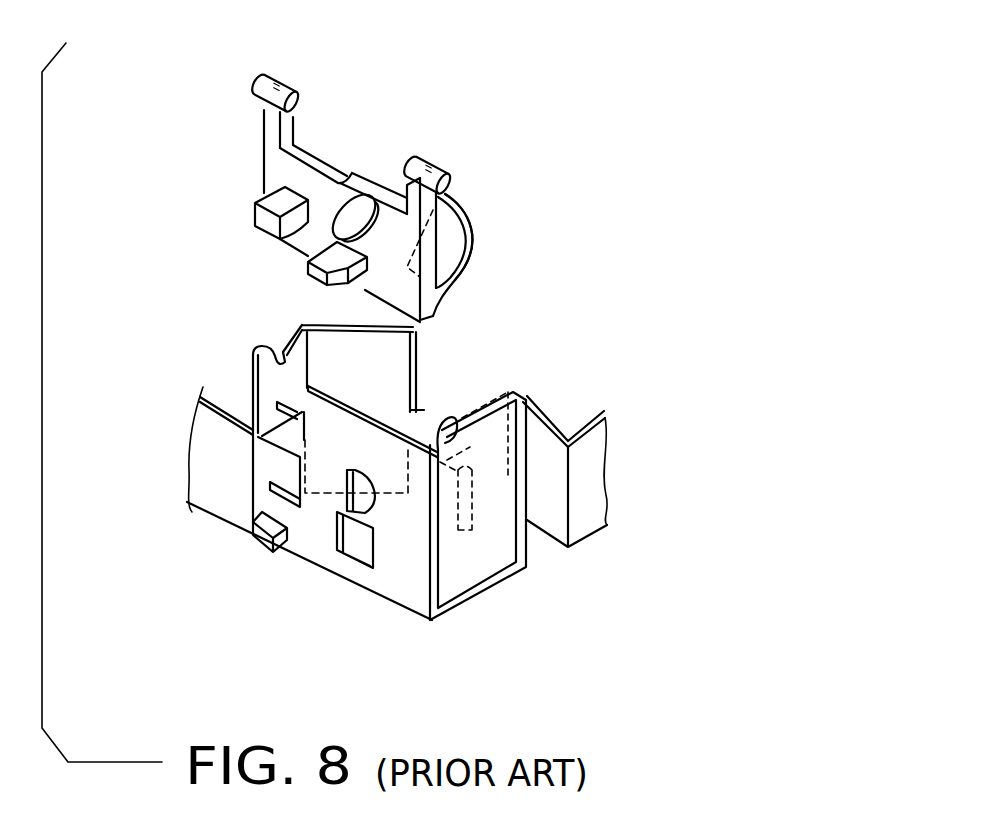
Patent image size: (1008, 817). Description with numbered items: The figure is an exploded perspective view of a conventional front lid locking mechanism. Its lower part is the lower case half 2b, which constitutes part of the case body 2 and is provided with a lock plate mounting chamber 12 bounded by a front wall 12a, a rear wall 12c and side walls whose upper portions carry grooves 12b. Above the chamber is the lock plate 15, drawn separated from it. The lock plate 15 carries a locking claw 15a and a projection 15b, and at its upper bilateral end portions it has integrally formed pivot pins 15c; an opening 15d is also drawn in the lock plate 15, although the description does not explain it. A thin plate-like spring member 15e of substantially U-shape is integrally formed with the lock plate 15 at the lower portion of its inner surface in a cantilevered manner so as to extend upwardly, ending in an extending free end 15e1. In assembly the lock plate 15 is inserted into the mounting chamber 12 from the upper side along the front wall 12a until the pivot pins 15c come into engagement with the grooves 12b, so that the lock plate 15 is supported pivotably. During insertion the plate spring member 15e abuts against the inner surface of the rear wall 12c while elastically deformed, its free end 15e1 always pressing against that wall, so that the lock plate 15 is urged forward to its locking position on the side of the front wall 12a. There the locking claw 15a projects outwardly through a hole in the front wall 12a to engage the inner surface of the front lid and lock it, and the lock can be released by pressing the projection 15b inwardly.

The case body 2 is at (605, 305).
The lower case half 2b is at (580, 528).
The lock plate mounting chamber 12 is at (390, 372).
The front wall 12a is at (368, 402).
The grooves 12b is at (272, 356).
The rear wall 12c is at (507, 553).
The lock plate 15 is at (262, 156).
The locking claw 15a is at (308, 268).
The projection 15b is at (255, 218).
The pivot pins 15c is at (277, 86).
The through hole 15d is at (348, 172).
The plate spring member 15e is at (455, 247).
The extending free end 15e1 is at (477, 218).